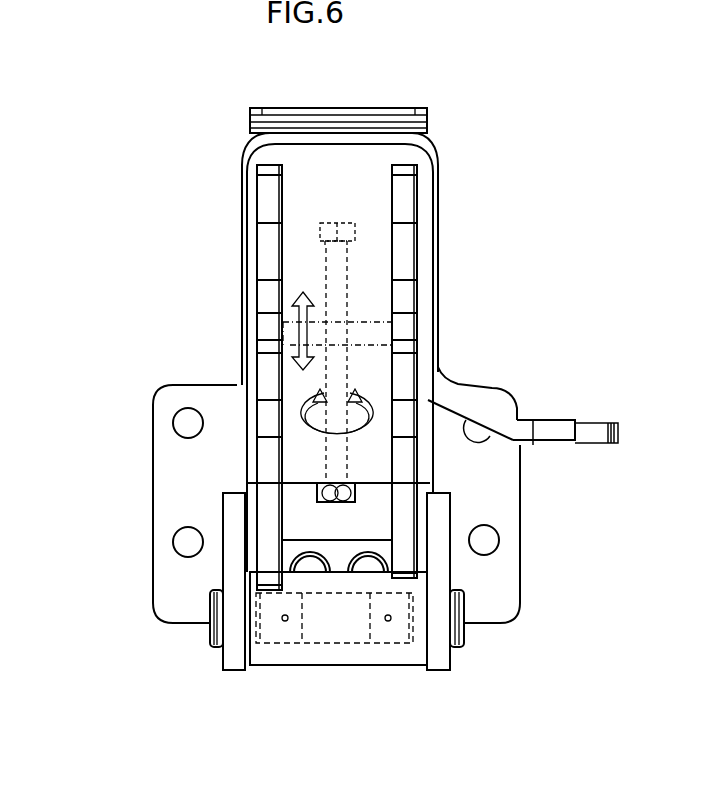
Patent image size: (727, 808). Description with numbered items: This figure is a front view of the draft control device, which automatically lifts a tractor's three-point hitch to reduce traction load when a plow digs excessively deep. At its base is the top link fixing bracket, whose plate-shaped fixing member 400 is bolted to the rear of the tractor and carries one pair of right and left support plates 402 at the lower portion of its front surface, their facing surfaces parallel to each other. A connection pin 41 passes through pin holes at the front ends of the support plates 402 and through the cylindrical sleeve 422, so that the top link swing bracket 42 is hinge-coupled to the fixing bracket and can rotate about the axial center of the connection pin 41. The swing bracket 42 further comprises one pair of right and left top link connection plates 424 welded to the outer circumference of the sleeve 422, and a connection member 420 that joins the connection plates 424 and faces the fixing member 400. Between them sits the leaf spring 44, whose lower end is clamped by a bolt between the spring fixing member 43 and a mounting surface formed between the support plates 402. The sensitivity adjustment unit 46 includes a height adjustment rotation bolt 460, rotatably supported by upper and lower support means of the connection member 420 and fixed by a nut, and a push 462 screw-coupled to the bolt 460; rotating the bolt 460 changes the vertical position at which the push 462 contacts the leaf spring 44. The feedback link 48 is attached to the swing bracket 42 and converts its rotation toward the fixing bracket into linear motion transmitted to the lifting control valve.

The top link swing bracket 42 is at (540, 138).
The connection member 420 is at (363, 158).
The top link connection plates 424 is at (403, 215).
The sensitivity adjustment unit 46 is at (148, 225).
The height adjustment rotation bolt 460 is at (322, 262).
The push 462 is at (288, 334).
The fixing member 400 is at (520, 512).
The feedback link 48 is at (556, 428).
The leaf spring 44 is at (305, 514).
The spring fixing member 43 is at (290, 556).
The support plates 402 is at (232, 583).
The connection pin 41 is at (465, 633).
The sleeve 422 is at (335, 650).